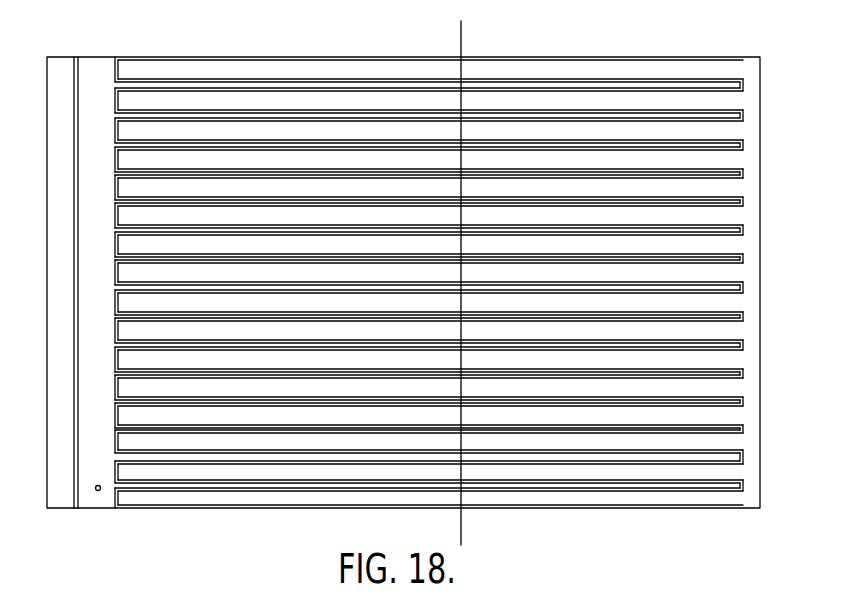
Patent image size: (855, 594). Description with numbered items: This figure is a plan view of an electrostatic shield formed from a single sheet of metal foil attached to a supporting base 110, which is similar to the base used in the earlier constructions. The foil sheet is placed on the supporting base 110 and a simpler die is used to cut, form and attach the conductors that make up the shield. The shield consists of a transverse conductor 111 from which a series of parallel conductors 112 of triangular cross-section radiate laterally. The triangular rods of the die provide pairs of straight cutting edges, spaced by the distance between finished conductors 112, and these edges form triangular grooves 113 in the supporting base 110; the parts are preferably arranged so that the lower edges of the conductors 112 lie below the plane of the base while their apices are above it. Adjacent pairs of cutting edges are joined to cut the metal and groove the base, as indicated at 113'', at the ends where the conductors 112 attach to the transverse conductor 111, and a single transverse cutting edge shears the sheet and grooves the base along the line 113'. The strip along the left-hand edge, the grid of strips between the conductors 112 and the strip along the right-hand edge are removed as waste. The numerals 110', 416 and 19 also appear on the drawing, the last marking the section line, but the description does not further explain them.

The supporting base 110 is at (400, 310).
The fin strips 110' is at (429, 308).
The transverse conductor 111 is at (96, 67).
The parallel conductors 112 is at (740, 140).
The triangular grooves 113 is at (429, 520).
The line of shear and groove 113' is at (43, 282).
The joined cut and groove at conductor ends 113'' is at (155, 305).
The drain opening 416 is at (98, 491).
The section line 19- 19 is at (486, 530).